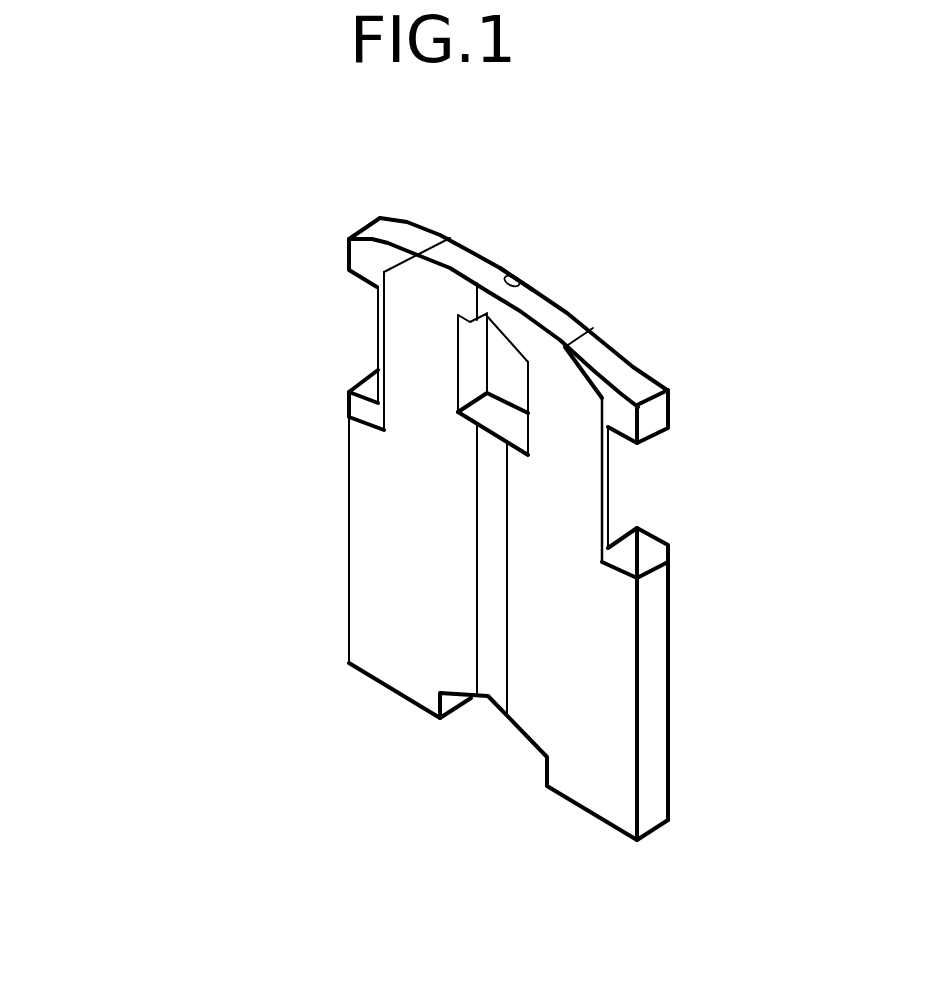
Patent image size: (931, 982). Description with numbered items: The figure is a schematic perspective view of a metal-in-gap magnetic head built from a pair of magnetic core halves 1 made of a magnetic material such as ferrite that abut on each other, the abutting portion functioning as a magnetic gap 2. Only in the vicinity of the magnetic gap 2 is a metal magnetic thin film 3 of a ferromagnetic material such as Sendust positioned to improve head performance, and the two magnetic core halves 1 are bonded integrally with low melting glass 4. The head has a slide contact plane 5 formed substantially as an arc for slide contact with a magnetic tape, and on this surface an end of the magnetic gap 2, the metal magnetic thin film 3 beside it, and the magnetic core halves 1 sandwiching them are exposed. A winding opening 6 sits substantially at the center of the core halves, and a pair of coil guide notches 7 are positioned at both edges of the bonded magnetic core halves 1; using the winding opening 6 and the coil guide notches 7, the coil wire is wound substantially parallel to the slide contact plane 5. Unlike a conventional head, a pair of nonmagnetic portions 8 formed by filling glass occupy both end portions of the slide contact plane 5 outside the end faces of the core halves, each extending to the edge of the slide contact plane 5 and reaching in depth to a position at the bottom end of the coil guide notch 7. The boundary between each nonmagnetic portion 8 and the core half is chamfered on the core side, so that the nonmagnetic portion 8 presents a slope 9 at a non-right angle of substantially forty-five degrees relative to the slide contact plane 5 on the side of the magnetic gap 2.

The magnetic core halves 1 is at (545, 727).
The magnetic gap 2 is at (508, 280).
The metal magnetic thin film 3 is at (500, 284).
The low melting glass 4 is at (518, 278).
The slide contact plane 5 is at (357, 232).
The winding opening 6 is at (510, 374).
The coil guide notches 7 is at (357, 349).
The nonmagnetic portions 8 is at (368, 256).
The slope 9 is at (403, 264).